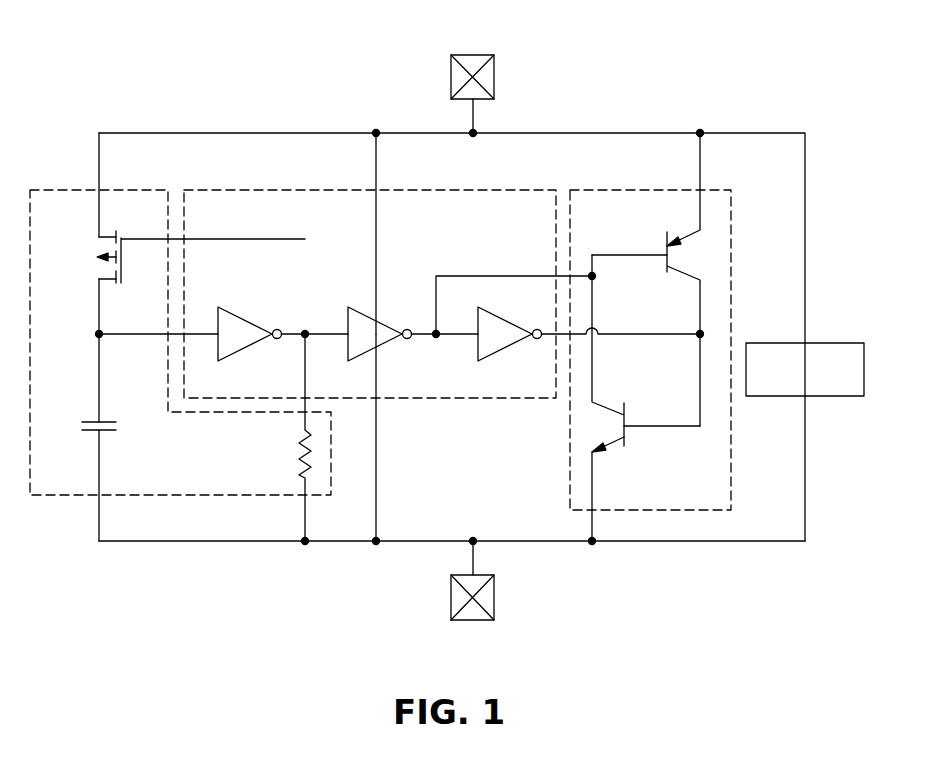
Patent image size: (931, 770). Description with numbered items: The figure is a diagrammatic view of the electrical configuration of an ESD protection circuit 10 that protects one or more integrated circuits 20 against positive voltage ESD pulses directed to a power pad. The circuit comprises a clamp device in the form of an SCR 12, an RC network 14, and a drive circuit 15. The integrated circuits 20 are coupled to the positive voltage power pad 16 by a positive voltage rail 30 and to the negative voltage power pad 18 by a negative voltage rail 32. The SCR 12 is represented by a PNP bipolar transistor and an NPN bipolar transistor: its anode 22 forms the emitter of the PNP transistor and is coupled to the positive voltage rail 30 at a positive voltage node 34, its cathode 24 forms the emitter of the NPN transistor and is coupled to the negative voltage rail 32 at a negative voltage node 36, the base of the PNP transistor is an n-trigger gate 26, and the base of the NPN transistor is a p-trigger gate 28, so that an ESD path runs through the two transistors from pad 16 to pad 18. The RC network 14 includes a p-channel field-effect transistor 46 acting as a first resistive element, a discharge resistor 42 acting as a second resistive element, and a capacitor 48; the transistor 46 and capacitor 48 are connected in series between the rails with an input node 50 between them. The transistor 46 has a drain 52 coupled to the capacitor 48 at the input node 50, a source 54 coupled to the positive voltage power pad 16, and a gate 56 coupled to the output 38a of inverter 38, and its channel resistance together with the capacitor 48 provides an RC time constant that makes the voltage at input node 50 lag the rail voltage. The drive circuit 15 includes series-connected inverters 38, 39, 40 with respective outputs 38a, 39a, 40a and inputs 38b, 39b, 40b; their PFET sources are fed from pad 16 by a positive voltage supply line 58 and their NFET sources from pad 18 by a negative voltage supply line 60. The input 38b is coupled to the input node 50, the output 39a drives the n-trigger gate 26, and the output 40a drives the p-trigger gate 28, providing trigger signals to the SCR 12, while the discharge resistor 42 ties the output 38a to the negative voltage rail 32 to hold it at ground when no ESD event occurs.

The ESD protection circuit 10 is at (103, 70).
The SCR 12 is at (731, 218).
The RC network 14 is at (53, 190).
The drive circuit 15 is at (251, 190).
The positive voltage power pad 16 is at (473, 55).
The negative voltage power pad 18 is at (473, 620).
The integrated circuits 20 is at (765, 343).
The anode 22 is at (700, 218).
The cathode 24 is at (592, 487).
The n-trigger gate 26 is at (620, 255).
The p-trigger gate 28 is at (668, 426).
The positive voltage rail 30 is at (608, 133).
The negative voltage rail 32 is at (562, 543).
The positive voltage node 34 is at (700, 133).
The negative voltage node 36 is at (592, 541).
The inverter 38 is at (248, 322).
The output of inverter 38 38a is at (277, 339).
The input of inverter 38 38b is at (216, 334).
The inverter 39 is at (385, 326).
The output of inverter 39 39a is at (407, 339).
The input of inverter 39 39b is at (346, 334).
The inverter 40 is at (505, 326).
The output of inverter 40 40a is at (537, 339).
The input of inverter 40 40b is at (476, 334).
The discharge resistor 42 is at (300, 456).
The field-effect transistor 46 is at (93, 258).
The capacitor 48 is at (113, 420).
The input node 50 is at (99, 334).
The drain 52 is at (98, 302).
The source 54 is at (98, 207).
The gate 56 is at (121, 268).
The positive voltage supply line 58 is at (376, 245).
The negative voltage supply line 60 is at (376, 448).